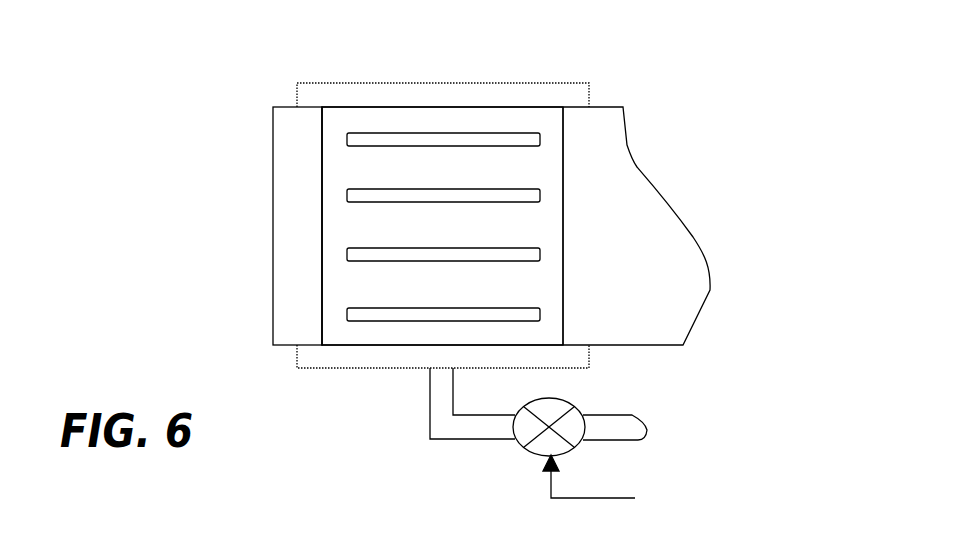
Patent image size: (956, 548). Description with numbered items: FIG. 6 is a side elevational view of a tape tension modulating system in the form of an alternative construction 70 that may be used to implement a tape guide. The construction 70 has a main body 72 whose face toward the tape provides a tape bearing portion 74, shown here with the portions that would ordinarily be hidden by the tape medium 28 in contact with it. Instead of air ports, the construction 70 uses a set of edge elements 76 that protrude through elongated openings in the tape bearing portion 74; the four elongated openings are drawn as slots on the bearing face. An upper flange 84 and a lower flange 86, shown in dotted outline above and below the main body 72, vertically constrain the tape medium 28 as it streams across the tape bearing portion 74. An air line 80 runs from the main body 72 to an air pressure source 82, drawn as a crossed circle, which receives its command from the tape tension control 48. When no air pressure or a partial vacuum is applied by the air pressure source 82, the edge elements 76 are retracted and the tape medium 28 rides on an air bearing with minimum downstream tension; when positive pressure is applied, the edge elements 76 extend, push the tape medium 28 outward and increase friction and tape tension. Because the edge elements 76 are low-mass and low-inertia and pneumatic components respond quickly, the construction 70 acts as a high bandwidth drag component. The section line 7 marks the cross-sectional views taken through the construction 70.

The alternative construction 70 is at (190, 103).
The main body 72 is at (564, 150).
The tape bearing portion 74 is at (473, 118).
The edge elements 76 is at (358, 132).
The air line 80 is at (428, 393).
The air pressure source 82 is at (522, 445).
The upper flange 84 is at (323, 83).
The lower flange 86 is at (322, 368).
The tape medium 28 is at (650, 346).
The tape tension control 48 is at (679, 500).
The section line 7- 7 is at (224, 202).